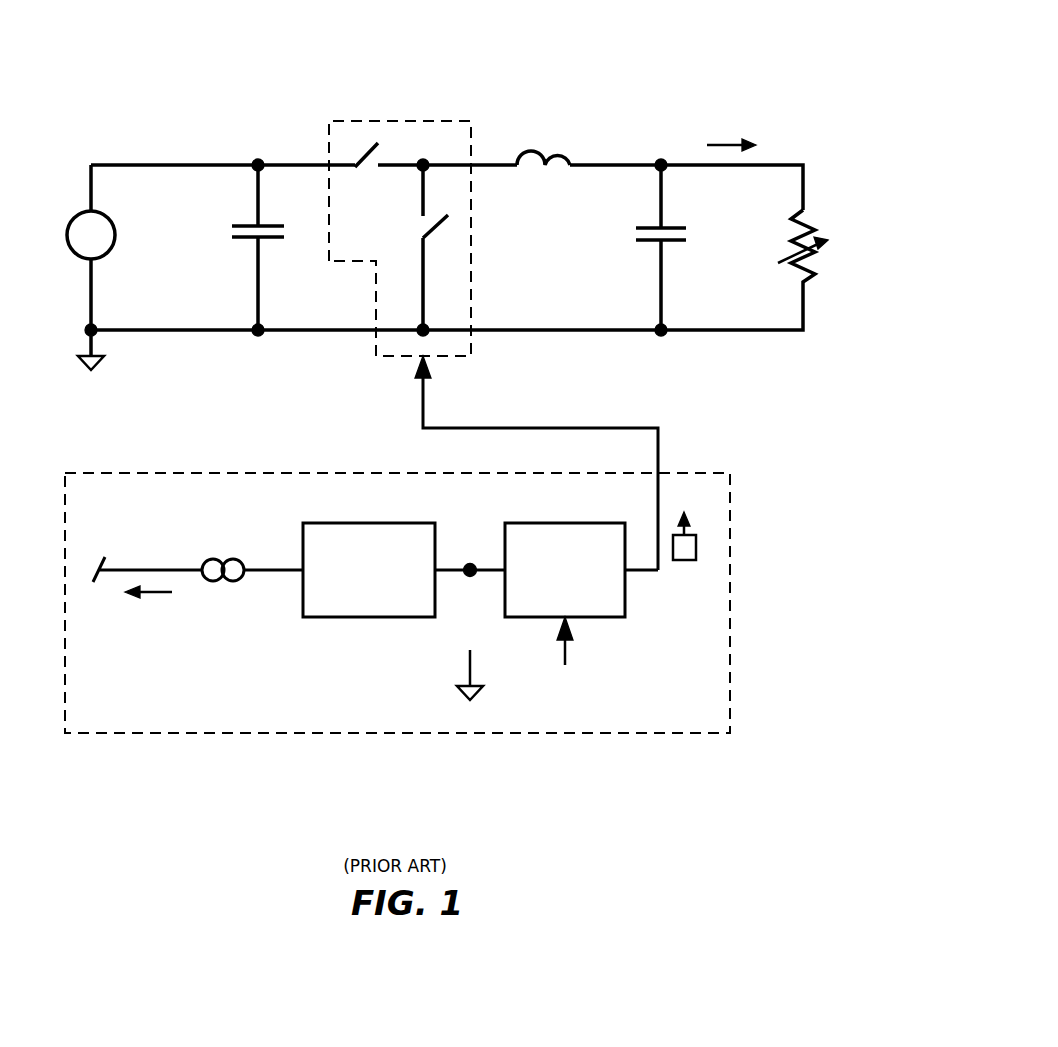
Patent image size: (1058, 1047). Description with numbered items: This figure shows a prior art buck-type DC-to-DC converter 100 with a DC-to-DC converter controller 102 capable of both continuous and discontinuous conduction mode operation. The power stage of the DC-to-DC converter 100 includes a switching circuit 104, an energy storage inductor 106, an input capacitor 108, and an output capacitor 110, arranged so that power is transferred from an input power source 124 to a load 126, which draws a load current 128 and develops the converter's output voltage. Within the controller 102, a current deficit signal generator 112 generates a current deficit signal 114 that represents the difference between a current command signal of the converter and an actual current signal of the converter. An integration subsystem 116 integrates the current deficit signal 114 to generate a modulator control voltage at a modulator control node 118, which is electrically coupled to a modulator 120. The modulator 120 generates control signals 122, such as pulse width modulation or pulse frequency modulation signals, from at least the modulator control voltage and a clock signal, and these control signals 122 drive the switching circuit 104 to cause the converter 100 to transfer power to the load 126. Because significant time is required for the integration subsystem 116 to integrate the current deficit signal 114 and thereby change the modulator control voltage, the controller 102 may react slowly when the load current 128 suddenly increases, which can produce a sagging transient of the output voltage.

The buck-type DC-to-DC converter 100 is at (758, 70).
The DC-to-DC converter controller 102 is at (79, 725).
The switching circuit 104 is at (375, 243).
The energy storage inductor 106 is at (546, 174).
The input capacitor 108 is at (234, 246).
The output capacitor 110 is at (643, 248).
The current deficit signal generator 112 is at (228, 548).
The current deficit signal 114 is at (155, 593).
The integration subsystem 116 is at (398, 615).
The modulator control node 118 is at (470, 564).
The modulator 120 is at (586, 615).
The control signals 122 is at (684, 561).
The input power source 124 is at (72, 214).
The load 126 is at (784, 243).
The load current 128 is at (722, 144).